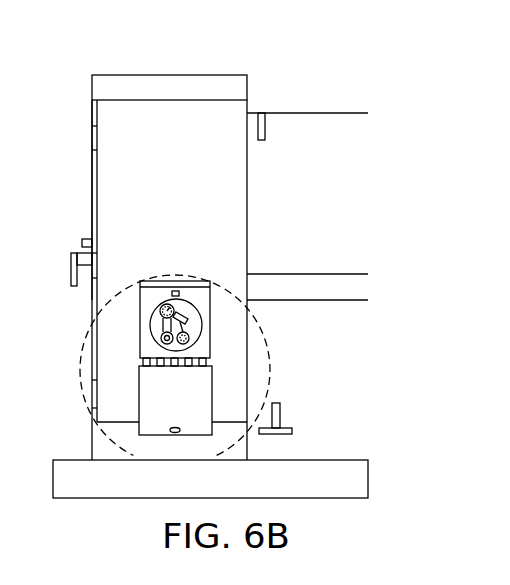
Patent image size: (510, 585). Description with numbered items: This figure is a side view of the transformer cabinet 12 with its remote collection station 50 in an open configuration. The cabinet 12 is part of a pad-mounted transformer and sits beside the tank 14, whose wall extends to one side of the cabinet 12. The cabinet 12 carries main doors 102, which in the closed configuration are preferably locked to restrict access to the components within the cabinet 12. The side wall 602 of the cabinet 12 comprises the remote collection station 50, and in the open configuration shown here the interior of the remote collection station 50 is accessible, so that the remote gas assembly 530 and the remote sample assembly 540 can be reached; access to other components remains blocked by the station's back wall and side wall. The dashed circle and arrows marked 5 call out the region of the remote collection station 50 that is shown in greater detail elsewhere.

The cabinet 12 is at (170, 75).
The tank 14 is at (338, 113).
The main doors 102 is at (92, 163).
The side wall 602 is at (198, 203).
The remote collection station 50 is at (126, 352).
The remote gas assembly 530 is at (163, 333).
The remote sample assembly 540 is at (187, 335).
The view direction indicator 5 is at (210, 465).